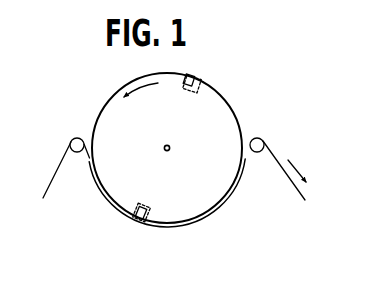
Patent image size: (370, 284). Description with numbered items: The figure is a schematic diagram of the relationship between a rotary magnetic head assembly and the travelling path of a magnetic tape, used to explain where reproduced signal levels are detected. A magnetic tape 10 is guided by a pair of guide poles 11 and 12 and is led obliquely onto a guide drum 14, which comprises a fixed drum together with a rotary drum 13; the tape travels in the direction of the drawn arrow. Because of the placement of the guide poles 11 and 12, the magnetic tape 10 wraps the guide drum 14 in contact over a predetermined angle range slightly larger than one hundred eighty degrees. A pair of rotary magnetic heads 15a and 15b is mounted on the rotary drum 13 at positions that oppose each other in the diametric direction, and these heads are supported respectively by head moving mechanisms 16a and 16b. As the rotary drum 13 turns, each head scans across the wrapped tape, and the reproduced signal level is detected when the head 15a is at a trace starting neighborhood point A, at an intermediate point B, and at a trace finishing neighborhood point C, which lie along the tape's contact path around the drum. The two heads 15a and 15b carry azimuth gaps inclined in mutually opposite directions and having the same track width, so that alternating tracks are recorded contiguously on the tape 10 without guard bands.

The magnetic tape 10 is at (61, 160).
The guide pole 11 is at (75, 138).
The guide pole 12 is at (257, 138).
The rotary drum 13 is at (231, 110).
The guide drum 14 is at (113, 92).
The rotary magnetic head 15a is at (139, 221).
The rotary magnetic head 15b is at (191, 75).
The head moving mechanism 16a is at (145, 205).
The head moving mechanism 16b is at (194, 90).
The trace starting neighborhood point A is at (90, 163).
The intermediate point B is at (176, 228).
The trace finishing neighborhood point C is at (248, 161).